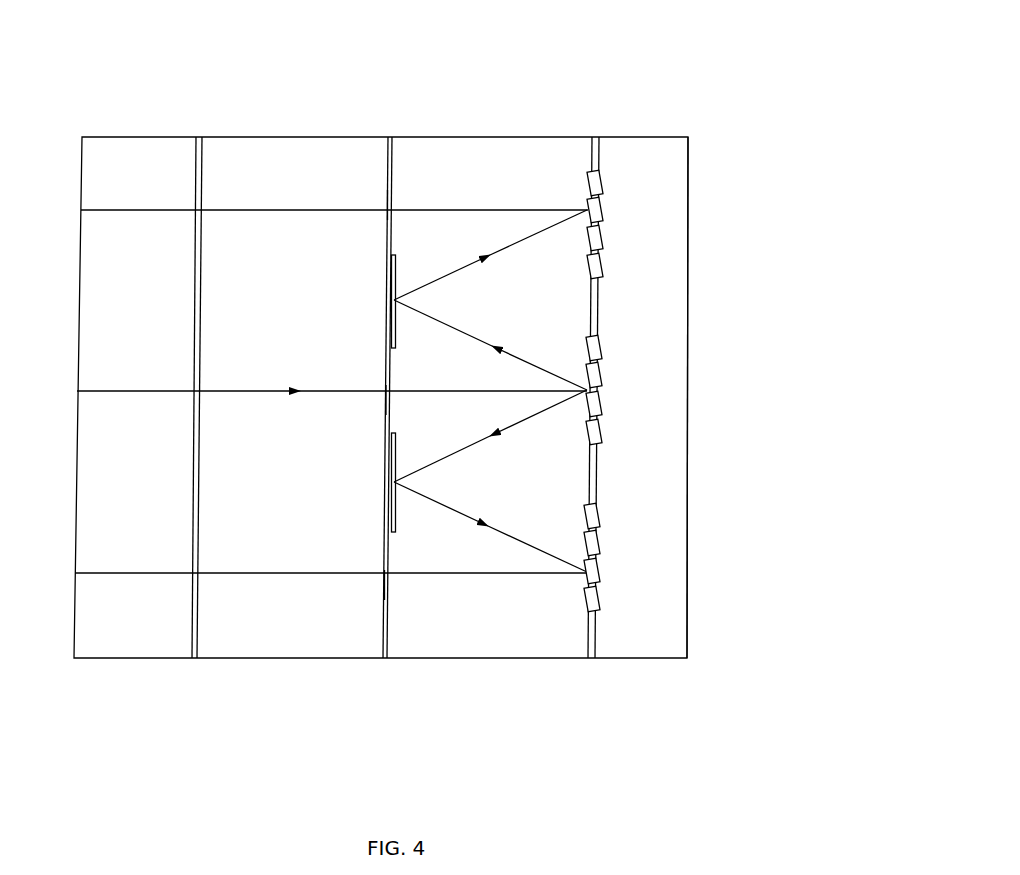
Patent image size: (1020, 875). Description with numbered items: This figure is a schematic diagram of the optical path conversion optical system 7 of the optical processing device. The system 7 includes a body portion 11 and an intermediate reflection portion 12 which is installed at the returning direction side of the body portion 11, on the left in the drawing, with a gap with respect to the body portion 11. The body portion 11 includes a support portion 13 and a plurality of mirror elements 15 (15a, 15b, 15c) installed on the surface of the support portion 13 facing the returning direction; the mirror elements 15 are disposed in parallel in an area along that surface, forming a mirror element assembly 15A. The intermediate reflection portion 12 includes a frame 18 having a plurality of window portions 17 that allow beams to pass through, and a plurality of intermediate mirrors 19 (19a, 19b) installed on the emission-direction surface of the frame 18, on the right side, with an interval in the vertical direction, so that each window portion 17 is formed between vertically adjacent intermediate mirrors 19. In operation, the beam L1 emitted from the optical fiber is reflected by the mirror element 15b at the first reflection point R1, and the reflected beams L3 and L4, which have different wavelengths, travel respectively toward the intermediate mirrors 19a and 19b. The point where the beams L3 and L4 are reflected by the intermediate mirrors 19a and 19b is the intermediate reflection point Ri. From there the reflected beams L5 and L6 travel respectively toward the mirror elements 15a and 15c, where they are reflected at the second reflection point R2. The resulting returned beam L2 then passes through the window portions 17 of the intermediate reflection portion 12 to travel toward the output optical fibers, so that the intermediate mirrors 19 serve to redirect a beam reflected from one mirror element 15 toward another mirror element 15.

The optical path conversion optical system 7 is at (620, 68).
The body portion 11 is at (642, 145).
The intermediate reflection portion 12 is at (303, 145).
The support portion 13 is at (637, 650).
The mirror elements 15 is at (692, 391).
The mirror element 15a is at (603, 210).
The mirror element 15b is at (602, 378).
The mirror element 15c is at (600, 545).
The mirror element assembly 15A is at (578, 155).
The window portions 17 is at (385, 205).
The frame 18 is at (388, 648).
The intermediate mirrors 19 is at (461, 397).
The intermediate mirror 19a is at (398, 268).
The intermediate mirror 19b is at (395, 513).
The beam L1 is at (120, 386).
The returned beam L2 is at (130, 208).
The reflected beam L3 is at (530, 362).
The reflected beam L4 is at (500, 428).
The reflected beam L5 is at (520, 250).
The reflected beam L6 is at (528, 540).
The first reflection point R1 is at (578, 402).
The second reflection point R2 is at (575, 201).
The intermediate reflection point Ri is at (412, 300).